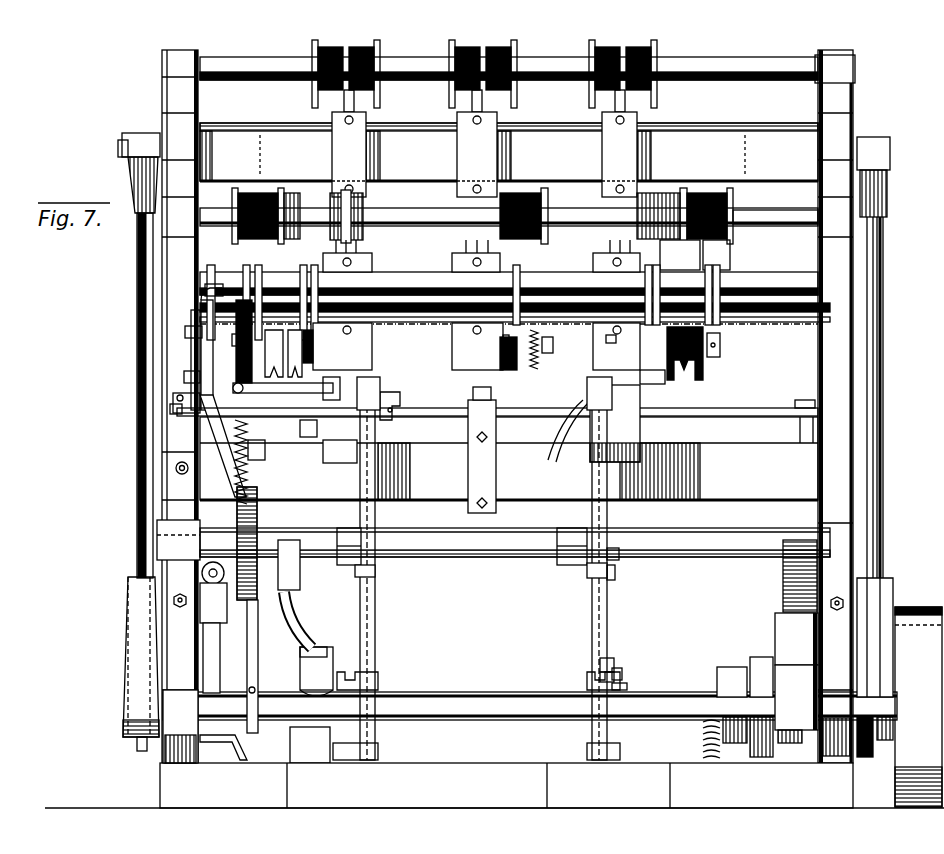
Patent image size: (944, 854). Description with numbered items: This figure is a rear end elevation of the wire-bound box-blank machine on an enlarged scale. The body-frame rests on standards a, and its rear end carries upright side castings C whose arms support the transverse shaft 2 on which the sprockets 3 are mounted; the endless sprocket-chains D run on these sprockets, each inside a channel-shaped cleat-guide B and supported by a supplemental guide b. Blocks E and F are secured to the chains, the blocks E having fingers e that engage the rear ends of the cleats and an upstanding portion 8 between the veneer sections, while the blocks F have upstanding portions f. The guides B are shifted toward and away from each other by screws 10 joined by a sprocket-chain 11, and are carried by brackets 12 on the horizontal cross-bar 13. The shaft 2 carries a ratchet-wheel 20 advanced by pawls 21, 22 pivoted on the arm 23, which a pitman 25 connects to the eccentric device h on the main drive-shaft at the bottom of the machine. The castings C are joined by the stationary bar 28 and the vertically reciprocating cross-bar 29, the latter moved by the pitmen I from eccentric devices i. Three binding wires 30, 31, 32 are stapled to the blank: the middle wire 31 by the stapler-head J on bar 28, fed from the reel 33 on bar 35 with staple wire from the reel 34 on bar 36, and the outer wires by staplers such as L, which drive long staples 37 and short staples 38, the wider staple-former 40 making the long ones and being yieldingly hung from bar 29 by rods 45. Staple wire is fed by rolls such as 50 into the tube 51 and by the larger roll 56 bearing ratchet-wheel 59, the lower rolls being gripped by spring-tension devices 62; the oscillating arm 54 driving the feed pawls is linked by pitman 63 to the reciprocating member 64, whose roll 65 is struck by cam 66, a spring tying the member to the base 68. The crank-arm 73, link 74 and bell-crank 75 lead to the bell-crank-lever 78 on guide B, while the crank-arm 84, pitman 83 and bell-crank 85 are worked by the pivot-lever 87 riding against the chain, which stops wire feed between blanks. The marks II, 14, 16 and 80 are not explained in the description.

The pitmen I is at (160, 469).
The oscillating arm 54 is at (145, 268).
The shaft or round bar 35 is at (573, 80).
The binding wire 32 is at (320, 96).
The middle binding wire 31 is at (462, 93).
The middle reel 33 is at (500, 88).
The binding wire 30 is at (632, 110).
The vertically reciprocating cross-bar 29 is at (780, 150).
The reel 34 is at (735, 216).
The rods 45 is at (652, 193).
The wider staple-former 40 is at (652, 187).
The long staples 37 is at (700, 256).
The shaft or round bar 36 is at (797, 227).
The stationary bar 28 is at (760, 275).
The short staples 38 is at (520, 254).
The tube 51 is at (365, 370).
The middle stapler-head J is at (463, 348).
The guides B is at (700, 396).
The crank-arm 73 is at (187, 313).
The crank-arm 84 is at (203, 290).
The link 74 is at (200, 352).
The stapler L is at (187, 332).
The ratchet-wheel 59 is at (233, 340).
The pitman 83 is at (187, 377).
The pitman 63 is at (190, 403).
The bell-crank 85 is at (172, 411).
The sprocket-chain 11 is at (192, 371).
The lever 80 is at (213, 487).
The bell-crank 75 is at (250, 435).
The ratchet-wheel 20 is at (258, 516).
The upright side castings C is at (177, 538).
The spring-tension-devices 62 is at (527, 374).
The section line II is at (620, 344).
The roll 56 is at (705, 356).
The fingers e is at (612, 343).
The screws 10 is at (660, 430).
The brackets 12 is at (632, 453).
The horizontal cross-bar 13 is at (480, 400).
The pitman 25 is at (605, 415).
The supplemental guides b is at (580, 403).
The pivot-lever 87 is at (398, 400).
The roll 50 is at (305, 450).
The standards a is at (308, 433).
The cam 66 is at (250, 458).
The bell-crank-lever 78 is at (276, 391).
The sprockets 3 is at (378, 483).
The endless sprocket-chains or belts D is at (378, 590).
The blocks F is at (620, 552).
The collars 14 is at (587, 570).
The upstanding portions f is at (618, 573).
The blocks E is at (583, 670).
The pin 16 is at (615, 673).
The upstanding portion 8 is at (628, 688).
The shaft 2 is at (462, 552).
The ratchet-dog or pawl 22 is at (233, 600).
The reciprocating member 64 is at (245, 648).
The ratchet-dog or pawl 21 is at (230, 623).
The roll 65 is at (208, 745).
The eccentric devices i is at (125, 648).
The arm 23 is at (300, 605).
The eccentric device h is at (380, 785).
The base 68 is at (750, 787).